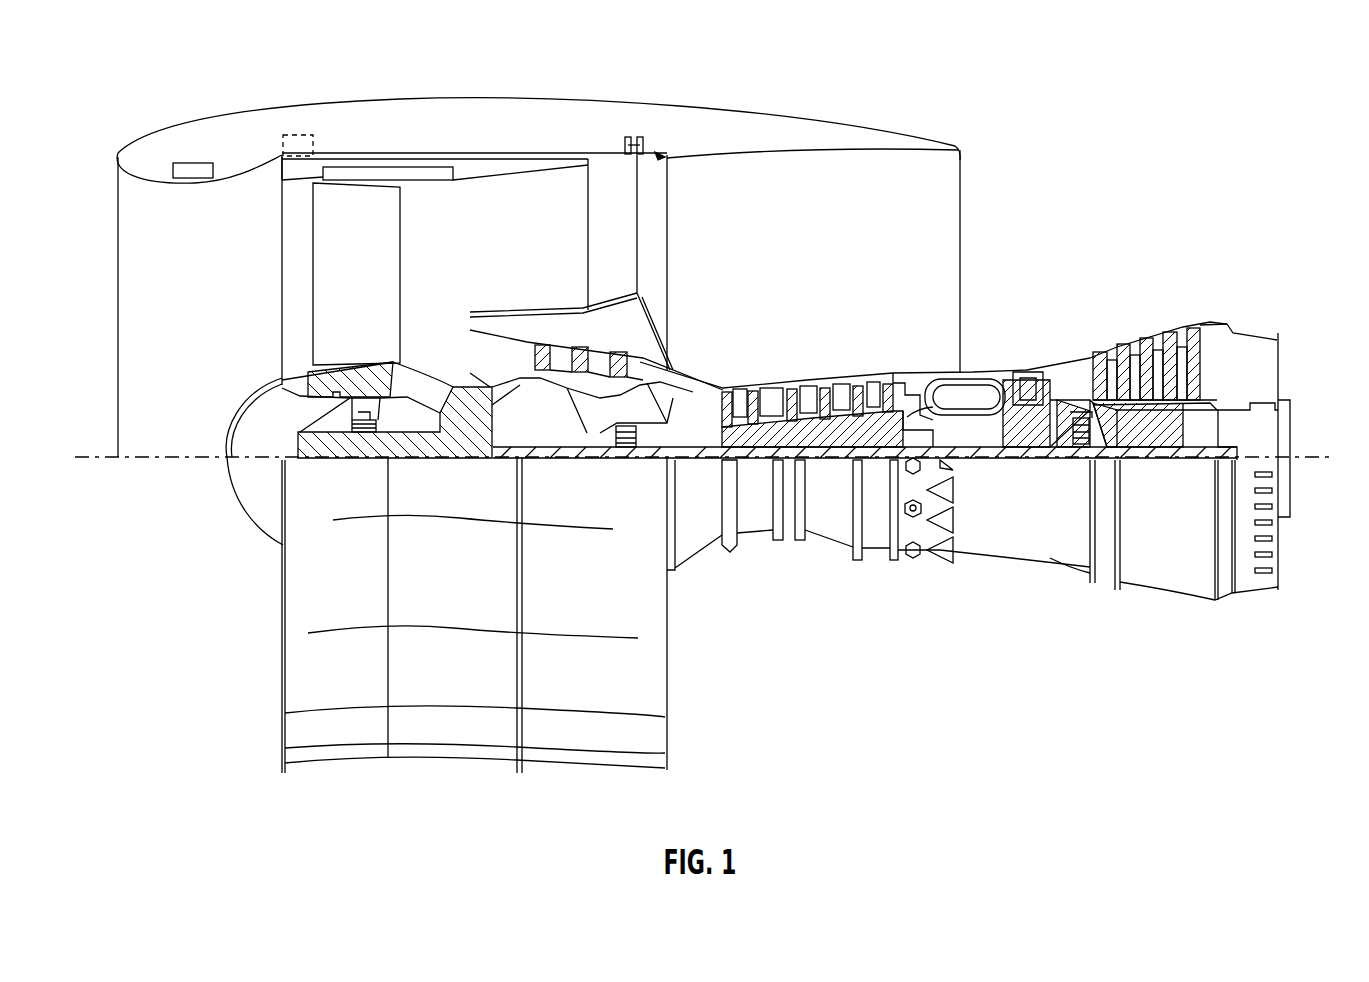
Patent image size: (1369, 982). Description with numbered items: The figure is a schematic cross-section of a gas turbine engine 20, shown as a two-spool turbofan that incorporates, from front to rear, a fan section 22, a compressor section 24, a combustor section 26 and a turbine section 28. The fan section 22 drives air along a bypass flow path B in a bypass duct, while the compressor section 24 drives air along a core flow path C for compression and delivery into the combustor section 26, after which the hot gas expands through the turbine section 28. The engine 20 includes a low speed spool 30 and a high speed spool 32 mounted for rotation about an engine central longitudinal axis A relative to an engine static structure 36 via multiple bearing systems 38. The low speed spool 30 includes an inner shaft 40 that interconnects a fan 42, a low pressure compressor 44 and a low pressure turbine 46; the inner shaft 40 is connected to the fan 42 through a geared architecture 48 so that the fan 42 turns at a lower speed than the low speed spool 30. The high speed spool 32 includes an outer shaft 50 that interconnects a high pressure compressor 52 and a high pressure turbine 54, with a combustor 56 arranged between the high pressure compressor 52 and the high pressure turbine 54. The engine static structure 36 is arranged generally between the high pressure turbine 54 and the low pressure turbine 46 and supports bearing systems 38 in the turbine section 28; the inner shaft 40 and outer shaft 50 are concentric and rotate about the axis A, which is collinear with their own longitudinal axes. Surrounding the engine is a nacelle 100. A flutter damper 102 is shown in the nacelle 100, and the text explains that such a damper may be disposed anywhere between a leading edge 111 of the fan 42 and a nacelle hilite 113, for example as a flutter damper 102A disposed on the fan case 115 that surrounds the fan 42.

The gas turbine engine 20 is at (1084, 175).
The fan section 22 is at (384, 157).
The compressor section 24 is at (775, 287).
The combustor section 26 is at (987, 296).
The turbine section 28 is at (1096, 287).
The low speed spool 30 is at (845, 460).
The high speed spool 32 is at (897, 392).
The engine static structure 36 is at (878, 551).
The bearing systems 38 is at (362, 447).
The inner shaft 40 is at (688, 460).
The fan 42 is at (340, 286).
The low pressure compressor 44 is at (598, 362).
The low pressure turbine 46 is at (1158, 337).
The geared architecture 48 is at (476, 447).
The outer shaft 50 is at (989, 440).
The high pressure compressor 52 is at (790, 397).
The high pressure turbine 54 is at (1022, 372).
The combustor 56 is at (970, 392).
The nacelle 100 is at (450, 98).
The flutter damper 102 is at (195, 163).
The flutter damper 102A is at (300, 133).
The leading edge 111 is at (310, 217).
The nacelle hilite 113 is at (118, 156).
The fan case 115 is at (330, 153).
The engine central longitudinal axis A is at (1310, 450).
The bypass flow path B is at (546, 239).
The core flow path C is at (457, 352).